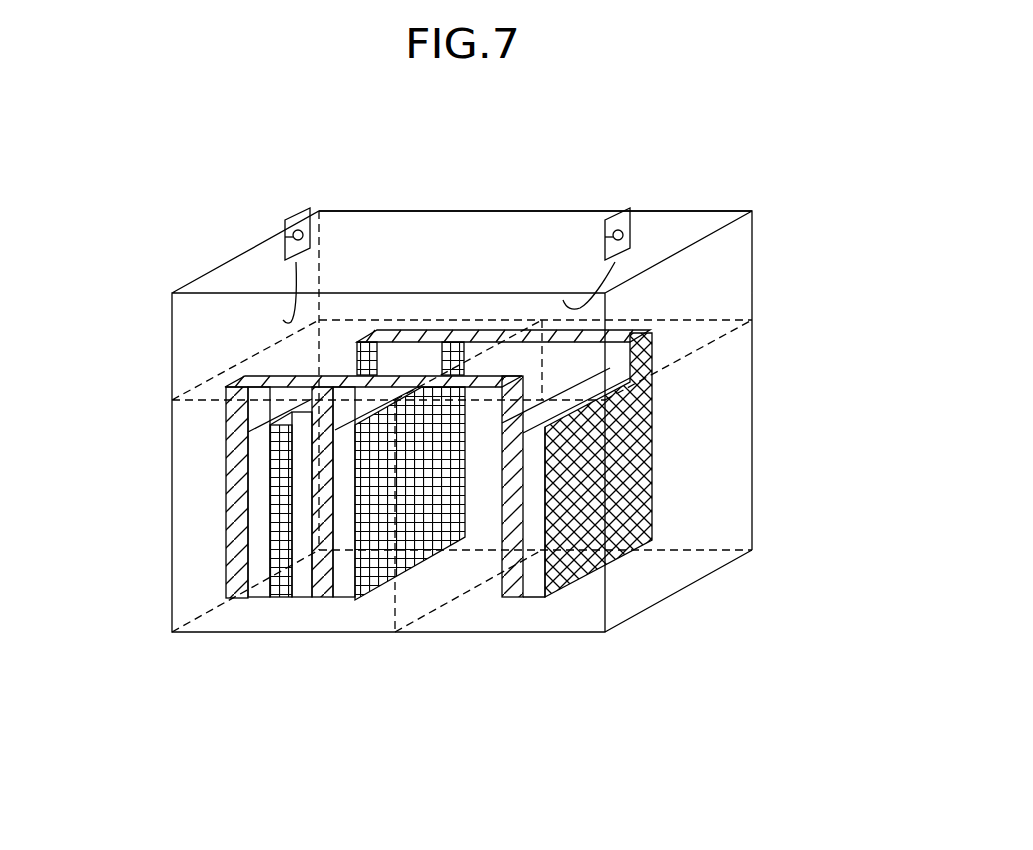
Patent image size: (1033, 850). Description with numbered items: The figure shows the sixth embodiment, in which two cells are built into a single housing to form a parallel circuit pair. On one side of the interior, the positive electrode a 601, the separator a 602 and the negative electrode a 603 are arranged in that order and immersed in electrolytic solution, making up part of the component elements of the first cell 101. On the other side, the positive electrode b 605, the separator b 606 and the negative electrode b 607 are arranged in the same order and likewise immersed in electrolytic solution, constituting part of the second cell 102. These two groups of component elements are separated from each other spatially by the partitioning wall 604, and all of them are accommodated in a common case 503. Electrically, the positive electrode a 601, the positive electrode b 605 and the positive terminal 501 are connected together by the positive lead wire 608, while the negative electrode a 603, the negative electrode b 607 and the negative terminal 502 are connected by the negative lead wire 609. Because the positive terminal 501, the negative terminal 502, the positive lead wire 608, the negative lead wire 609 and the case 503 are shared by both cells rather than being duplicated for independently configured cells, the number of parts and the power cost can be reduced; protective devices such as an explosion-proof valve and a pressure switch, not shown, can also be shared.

The first cell 101 is at (655, 580).
The second cell 102 is at (200, 498).
The positive terminal 501 is at (298, 212).
The negative terminal 502 is at (626, 230).
The case 503 is at (460, 211).
The positive electrode a 601 is at (510, 597).
The separator a 602 is at (531, 597).
The negative electrode a 603 is at (578, 580).
The partitioning wall 604 is at (400, 608).
The positive electrode b 605 is at (250, 591).
The separator b 606 is at (263, 593).
The negative electrode b 607 is at (270, 592).
The positive lead wire 608 is at (270, 378).
The negative lead wire 609 is at (555, 335).